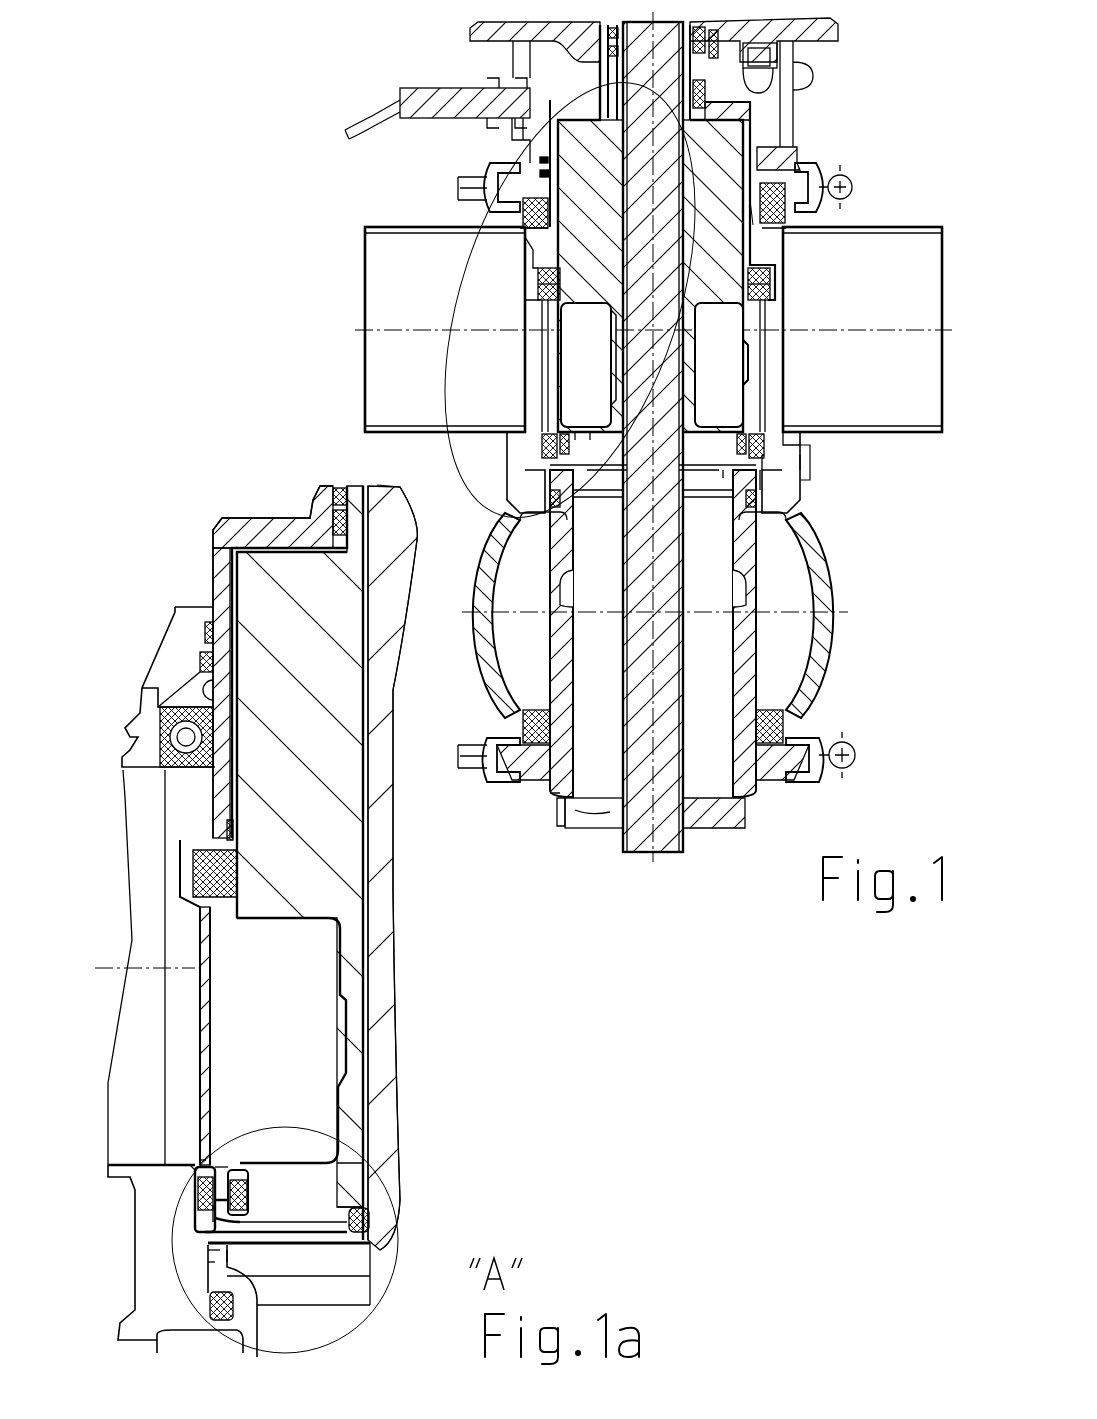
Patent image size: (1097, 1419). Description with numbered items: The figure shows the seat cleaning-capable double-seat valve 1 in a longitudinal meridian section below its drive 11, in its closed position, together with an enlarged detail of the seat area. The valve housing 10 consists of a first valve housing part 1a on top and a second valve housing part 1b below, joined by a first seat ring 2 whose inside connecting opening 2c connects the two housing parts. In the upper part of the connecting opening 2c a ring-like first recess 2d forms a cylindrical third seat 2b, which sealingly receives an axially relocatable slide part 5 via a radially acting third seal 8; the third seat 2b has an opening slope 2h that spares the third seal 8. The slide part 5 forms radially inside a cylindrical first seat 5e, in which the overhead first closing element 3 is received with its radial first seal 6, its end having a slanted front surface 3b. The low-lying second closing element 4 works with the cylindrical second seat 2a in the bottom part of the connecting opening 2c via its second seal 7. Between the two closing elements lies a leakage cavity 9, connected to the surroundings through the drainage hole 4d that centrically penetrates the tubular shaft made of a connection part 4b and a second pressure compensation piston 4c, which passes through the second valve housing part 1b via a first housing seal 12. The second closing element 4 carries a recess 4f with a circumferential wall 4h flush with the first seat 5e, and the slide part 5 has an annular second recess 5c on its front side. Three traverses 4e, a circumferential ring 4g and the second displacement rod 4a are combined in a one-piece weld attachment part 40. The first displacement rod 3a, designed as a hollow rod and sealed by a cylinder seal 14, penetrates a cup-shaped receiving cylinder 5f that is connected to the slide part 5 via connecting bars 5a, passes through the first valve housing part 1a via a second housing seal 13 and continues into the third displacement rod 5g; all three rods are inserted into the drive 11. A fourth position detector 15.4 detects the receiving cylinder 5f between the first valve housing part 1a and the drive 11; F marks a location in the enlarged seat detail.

In FIG. 1, the double-seat valve 1 is at (845, 479).
In FIG. 1, the first valve housing part 1a is at (792, 218).
In FIG. 1, the second valve housing part 1b is at (803, 703).
In FIG. 1, the first seat ring 2 is at (525, 472).
In FIG. 1A, the first seat ring 2 is at (155, 1285).
In FIG. 1A, the second seat 2a is at (200, 1290).
In FIG. 1A, the third seat 2b is at (196, 1178).
In FIG. 1, the connecting opening 2c is at (590, 458).
In FIG. 1, the first recess 2d is at (792, 445).
In FIG. 1A, the opening slope 2h is at (195, 1168).
In FIG. 1, the first closing element 3 is at (745, 428).
In FIG. 1A, the first closing element 3 is at (287, 1212).
In FIG. 1, the first displacement rod 3a is at (705, 66).
In FIG. 1A, the front surface 3b is at (322, 1222).
In FIG. 1, the second closing element 4 is at (755, 507).
In FIG. 1A, the second closing element 4 is at (240, 1322).
In FIG. 1, the second displacement rod 4a is at (668, 672).
In FIG. 1, the connection part 4b is at (742, 567).
In FIG. 1, the second pressure compensation piston 4c is at (750, 652).
In FIG. 1, the drainage hole 4d is at (708, 647).
In FIG. 1, the traverses 4e is at (738, 818).
In FIG. 1A, the recess 4f is at (362, 1258).
In FIG. 1, the circumferential ring 4g is at (558, 822).
In FIG. 1, the circumferential wall 4h is at (560, 474).
In FIG. 1A, the circumferential wall 4h is at (222, 1252).
In FIG. 1A, the slide part 5 is at (213, 1172).
In FIG. 1A, the connecting bars 5a is at (205, 948).
In FIG. 1A, the second recess 5c is at (228, 1254).
In FIG. 1A, the first seat 5e is at (247, 1173).
In FIG. 1, the receiving cylinder 5f is at (792, 182).
In FIG. 1A, the receiving cylinder 5f is at (228, 527).
In FIG. 1, the third displacement rod 5g is at (748, 62).
In FIG. 1A, the third displacement rod 5g is at (322, 508).
In FIG. 1, the first seal 6 is at (545, 418).
In FIG. 1A, the first seal 6 is at (322, 1173).
In FIG. 1, the second seal 7 is at (550, 502).
In FIG. 1A, the second seal 7 is at (212, 1262).
In FIG. 1, the third seal 8 is at (540, 445).
In FIG. 1A, the third seal 8 is at (110, 1165).
In FIG. 1, the leakage cavity 9 is at (717, 468).
In FIG. 1, the valve housing 10 is at (805, 483).
In FIG. 1, the drive 11 is at (840, 44).
In FIG. 1, the first housing seal 12 is at (798, 725).
In FIG. 1, the second housing seal 13 is at (545, 237).
In FIG. 1, the cylinder seal 14 is at (542, 283).
In FIG. 1, the fourth position detector 15.4 is at (455, 93).
In FIG. 1, the weld attachment part 40 is at (618, 820).
In FIG. 1A, the force direction F is at (203, 1160).